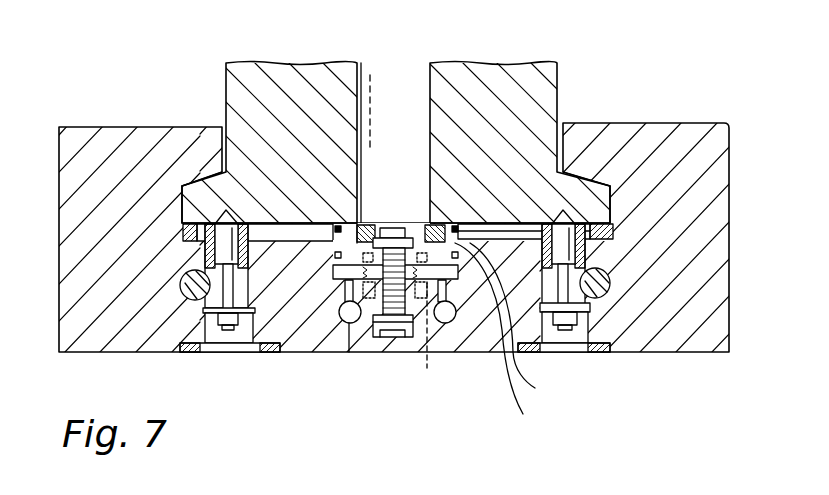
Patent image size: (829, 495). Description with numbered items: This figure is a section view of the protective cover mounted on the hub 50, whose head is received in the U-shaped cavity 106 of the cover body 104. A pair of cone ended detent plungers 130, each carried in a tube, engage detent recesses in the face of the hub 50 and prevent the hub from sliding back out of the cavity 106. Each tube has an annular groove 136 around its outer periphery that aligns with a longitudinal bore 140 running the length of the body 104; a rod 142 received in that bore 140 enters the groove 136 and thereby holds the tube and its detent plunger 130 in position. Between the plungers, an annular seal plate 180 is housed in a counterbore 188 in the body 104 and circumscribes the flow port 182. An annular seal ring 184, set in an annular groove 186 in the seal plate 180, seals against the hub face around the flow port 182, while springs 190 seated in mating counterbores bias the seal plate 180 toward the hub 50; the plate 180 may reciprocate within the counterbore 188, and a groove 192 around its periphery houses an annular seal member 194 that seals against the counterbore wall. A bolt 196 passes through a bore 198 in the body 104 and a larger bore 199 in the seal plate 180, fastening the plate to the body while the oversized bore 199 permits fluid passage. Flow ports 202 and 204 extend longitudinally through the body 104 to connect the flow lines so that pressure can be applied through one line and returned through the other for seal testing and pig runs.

The hub 50 is at (262, 75).
The body 104 is at (688, 135).
The U-shaped cavity 106 is at (165, 203).
The detent plunger 130 is at (222, 252).
The annular groove 136 is at (243, 290).
The longitudinal bore 140 is at (183, 283).
The rod 142 is at (605, 279).
The annular seal plate 180 is at (358, 222).
The flow port 182 is at (395, 78).
The annular seal ring 184 is at (433, 218).
The annular groove 186 is at (445, 225).
The counterbore 188 is at (458, 280).
The spring 190 is at (427, 335).
The groove 192 is at (506, 334).
The annular seal member 194 is at (519, 320).
The bolt 196 is at (397, 340).
The bore 198 is at (386, 338).
The bore 199 is at (410, 232).
The flow port 202 is at (345, 352).
The flow port 204 is at (445, 325).